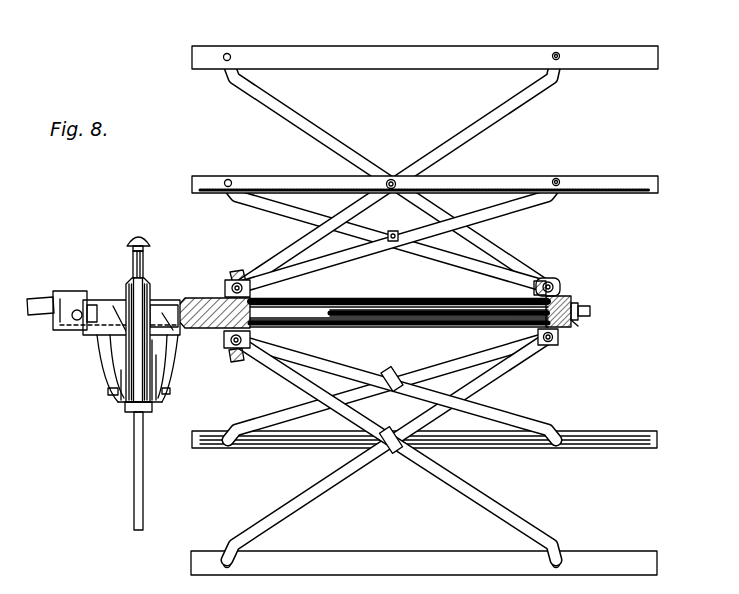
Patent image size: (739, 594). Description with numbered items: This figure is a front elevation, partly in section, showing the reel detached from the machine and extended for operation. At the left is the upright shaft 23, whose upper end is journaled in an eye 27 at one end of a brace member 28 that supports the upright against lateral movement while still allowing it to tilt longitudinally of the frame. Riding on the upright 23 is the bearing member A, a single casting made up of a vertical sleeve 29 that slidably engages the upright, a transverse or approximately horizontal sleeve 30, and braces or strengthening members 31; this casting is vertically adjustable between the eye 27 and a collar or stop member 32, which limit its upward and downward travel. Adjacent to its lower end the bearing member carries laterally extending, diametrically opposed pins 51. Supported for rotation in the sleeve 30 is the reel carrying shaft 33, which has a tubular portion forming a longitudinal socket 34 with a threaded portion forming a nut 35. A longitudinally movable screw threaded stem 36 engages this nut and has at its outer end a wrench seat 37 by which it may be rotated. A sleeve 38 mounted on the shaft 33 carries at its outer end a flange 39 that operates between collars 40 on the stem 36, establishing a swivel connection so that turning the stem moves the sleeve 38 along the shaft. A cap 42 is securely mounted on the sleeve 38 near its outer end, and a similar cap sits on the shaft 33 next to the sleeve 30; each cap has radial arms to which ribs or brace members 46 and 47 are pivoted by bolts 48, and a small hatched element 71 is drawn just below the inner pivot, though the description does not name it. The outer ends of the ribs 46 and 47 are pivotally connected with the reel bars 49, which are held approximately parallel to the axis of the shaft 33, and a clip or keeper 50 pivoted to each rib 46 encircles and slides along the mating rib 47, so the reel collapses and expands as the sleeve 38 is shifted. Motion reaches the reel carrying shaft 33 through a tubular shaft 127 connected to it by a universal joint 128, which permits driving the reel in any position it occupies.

The upright shaft 23 is at (134, 440).
The eye 27 is at (151, 242).
The brace member 28 is at (124, 238).
The vertical sleeve 29 is at (128, 350).
The transverse sleeve 30 is at (187, 298).
The braces 31 is at (168, 350).
The collar 32 is at (152, 407).
The reel carrying shaft 33 is at (236, 272).
The longitudinal socket 34 is at (322, 320).
The nut 35 is at (558, 294).
The screw threaded stem 36 is at (372, 325).
The wrench seat 37 is at (591, 310).
The sleeve 38 is at (410, 325).
The flange 39 is at (578, 323).
The collars 40 is at (576, 303).
The cap 42 is at (572, 300).
The ribs 46 is at (308, 244).
The ribs 47 is at (508, 258).
The bolts 48 is at (243, 280).
The reel bars 49 is at (449, 46).
The clip or keeper 50 is at (393, 233).
The pins 51 is at (171, 391).
The plate 71 is at (236, 350).
The tubular shaft 127 is at (40, 298).
The universal joint 128 is at (72, 291).
The bearing member A is at (123, 322).